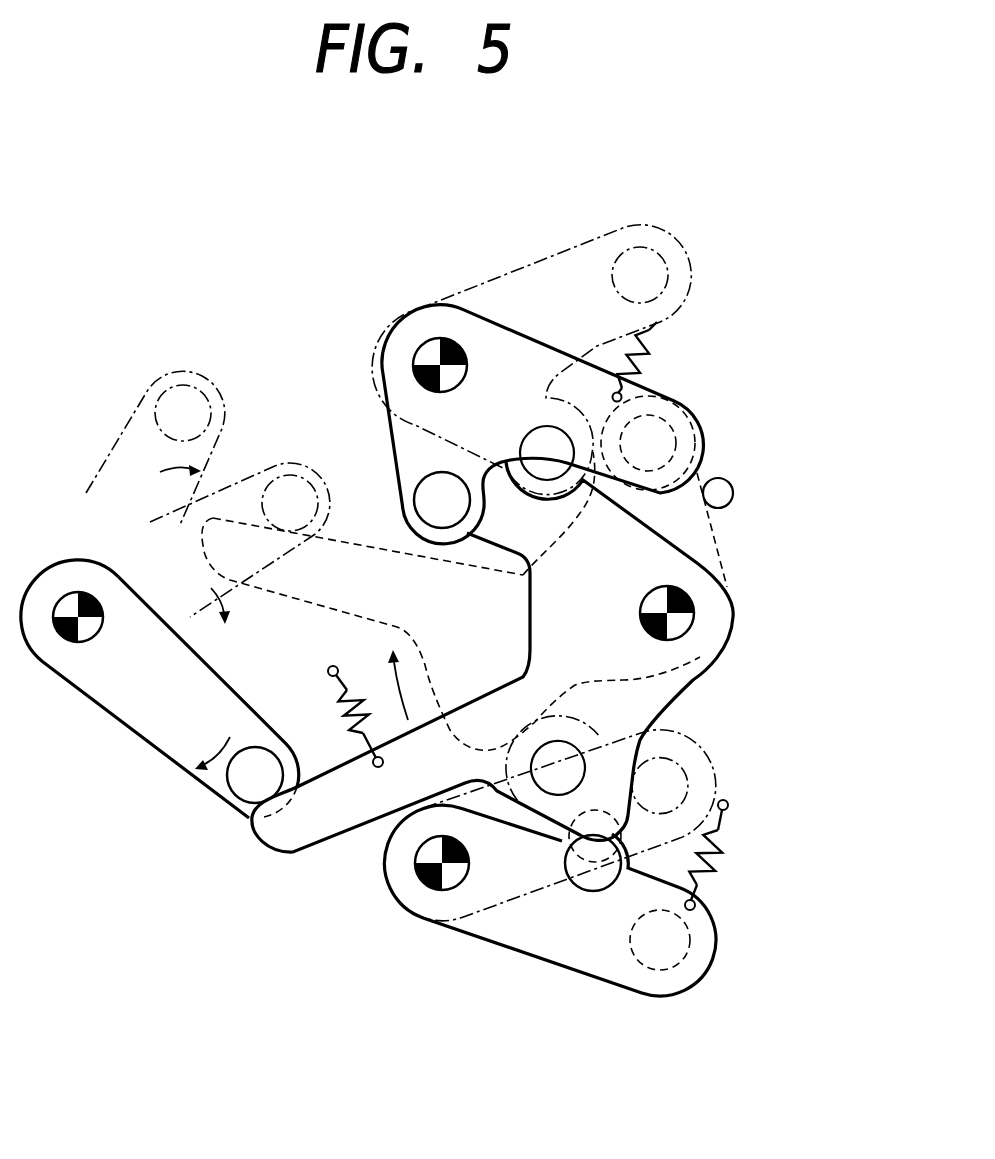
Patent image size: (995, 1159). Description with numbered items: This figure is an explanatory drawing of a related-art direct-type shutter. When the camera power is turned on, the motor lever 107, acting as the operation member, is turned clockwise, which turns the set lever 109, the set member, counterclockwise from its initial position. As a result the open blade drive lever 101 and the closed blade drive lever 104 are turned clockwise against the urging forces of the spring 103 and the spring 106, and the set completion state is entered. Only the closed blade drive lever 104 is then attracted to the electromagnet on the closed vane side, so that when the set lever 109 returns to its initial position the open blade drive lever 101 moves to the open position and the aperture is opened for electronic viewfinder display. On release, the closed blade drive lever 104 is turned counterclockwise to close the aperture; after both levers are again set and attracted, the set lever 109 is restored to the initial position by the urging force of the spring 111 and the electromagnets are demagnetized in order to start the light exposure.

The open blade drive lever 101 is at (497, 333).
The spring 103 is at (648, 358).
The closed blade drive lever 104 is at (588, 955).
The spring 106 is at (712, 872).
The motor lever 107 is at (160, 737).
The set lever 109 is at (690, 553).
The spring 111 is at (338, 707).